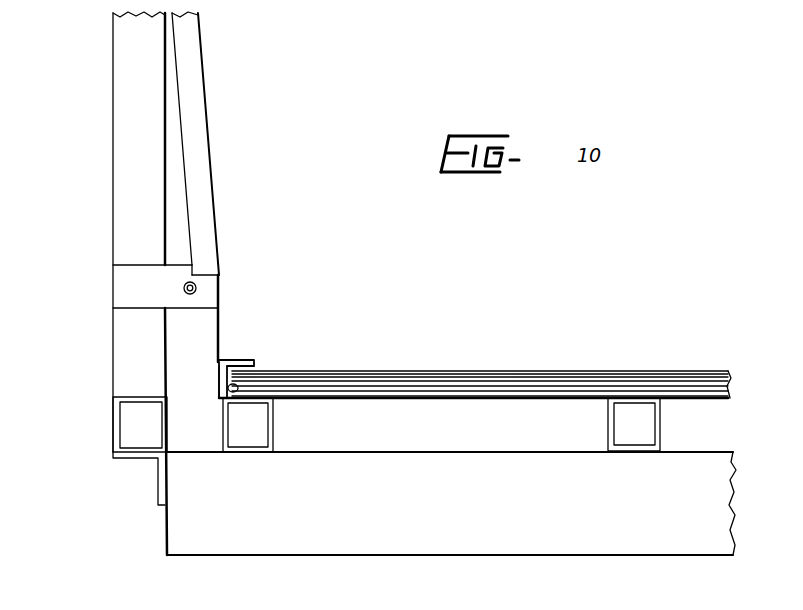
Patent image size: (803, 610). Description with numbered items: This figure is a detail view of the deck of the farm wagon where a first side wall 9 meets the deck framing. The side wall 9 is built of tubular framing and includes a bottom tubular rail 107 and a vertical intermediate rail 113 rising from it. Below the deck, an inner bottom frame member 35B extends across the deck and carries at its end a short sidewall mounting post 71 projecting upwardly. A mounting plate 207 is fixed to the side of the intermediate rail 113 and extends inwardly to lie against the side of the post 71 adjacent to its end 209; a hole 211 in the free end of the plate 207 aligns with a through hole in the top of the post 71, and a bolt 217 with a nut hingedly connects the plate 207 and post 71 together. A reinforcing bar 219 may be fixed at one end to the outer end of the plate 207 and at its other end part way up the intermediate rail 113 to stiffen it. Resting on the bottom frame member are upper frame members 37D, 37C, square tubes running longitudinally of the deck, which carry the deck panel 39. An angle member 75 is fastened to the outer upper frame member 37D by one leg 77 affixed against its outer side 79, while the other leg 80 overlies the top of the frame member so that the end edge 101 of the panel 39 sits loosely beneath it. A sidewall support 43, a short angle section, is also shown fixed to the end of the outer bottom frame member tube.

The first side wall 9 is at (112, 93).
The vertical intermediate rail 113 is at (112, 165).
The reinforcing bar 219 is at (210, 142).
The end of support post 209 is at (180, 265).
The mounting plate 207 is at (136, 265).
The bolt 217 is at (183, 289).
The hole 211 is at (197, 289).
The sidewall mounting post 71 is at (221, 326).
The angle member 75 is at (230, 364).
The leg of angle member 80 is at (250, 360).
The leg of angle member 77 is at (219, 376).
The deck panel 39 is at (437, 372).
The end edge of deck panel 101 is at (237, 388).
The outer upper frame member 37D is at (274, 420).
The inner upper frame member 37C is at (661, 418).
The bottom tubular rail 107 is at (113, 425).
The sidewall support 43 is at (150, 462).
The outer side of frame member 79 is at (219, 440).
The inner bottom frame member 35B is at (381, 556).